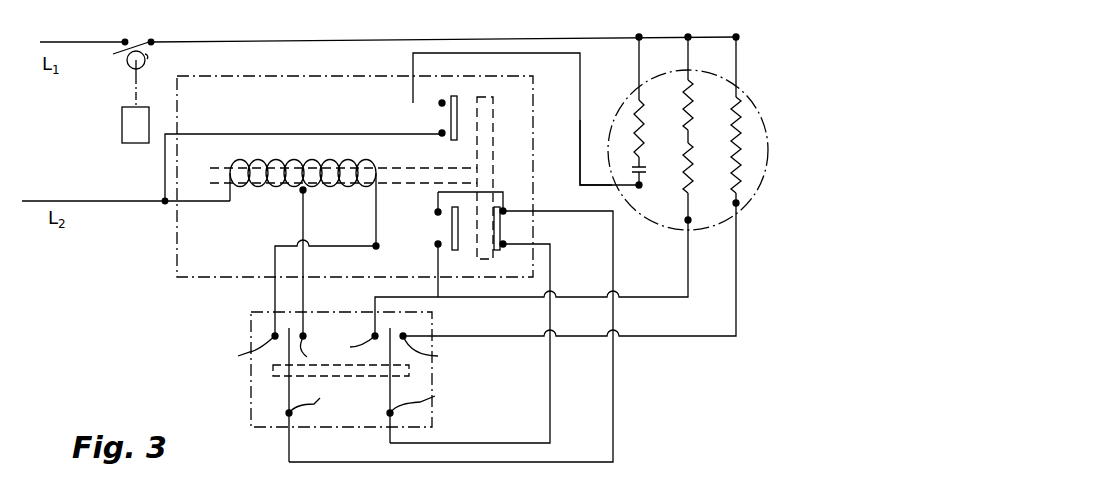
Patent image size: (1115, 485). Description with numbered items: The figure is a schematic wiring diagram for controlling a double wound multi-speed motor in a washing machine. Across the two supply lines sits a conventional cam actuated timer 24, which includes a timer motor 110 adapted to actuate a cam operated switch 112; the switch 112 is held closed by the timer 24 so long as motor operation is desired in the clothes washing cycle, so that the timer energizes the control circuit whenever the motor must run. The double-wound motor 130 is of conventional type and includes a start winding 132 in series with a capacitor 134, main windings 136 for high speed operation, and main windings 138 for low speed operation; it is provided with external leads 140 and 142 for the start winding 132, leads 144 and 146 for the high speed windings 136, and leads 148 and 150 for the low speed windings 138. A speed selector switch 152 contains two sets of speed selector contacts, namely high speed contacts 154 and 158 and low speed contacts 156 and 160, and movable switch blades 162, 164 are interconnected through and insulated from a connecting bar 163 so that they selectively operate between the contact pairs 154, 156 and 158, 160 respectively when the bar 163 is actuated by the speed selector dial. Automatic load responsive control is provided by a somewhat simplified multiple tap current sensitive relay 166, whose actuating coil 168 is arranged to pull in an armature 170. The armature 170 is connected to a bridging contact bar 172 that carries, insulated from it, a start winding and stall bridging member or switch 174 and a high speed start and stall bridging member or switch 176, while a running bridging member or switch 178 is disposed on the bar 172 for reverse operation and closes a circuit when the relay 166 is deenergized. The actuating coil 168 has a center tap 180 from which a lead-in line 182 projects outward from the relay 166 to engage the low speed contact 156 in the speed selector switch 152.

The cam actuated timer 24 is at (105, 104).
The timer motor 110 is at (138, 133).
The cam operated switch 112 is at (139, 48).
The double-wound motor 130 is at (787, 241).
The start winding 132 is at (643, 119).
The capacitor 134 is at (643, 168).
The main windings for high speed operation 136 is at (690, 124).
The main windings for low speed operation 138 is at (732, 148).
The external lead 140 is at (636, 74).
The external lead 142 is at (590, 187).
The lead 144 is at (690, 63).
The lead 146 is at (688, 235).
The lead 148 is at (739, 71).
The lead 150 is at (738, 302).
The speed selector switch 152 is at (250, 318).
The high speed contact 154 is at (238, 352).
The low speed contact 156 is at (320, 352).
The high speed contact 158 is at (351, 336).
The low speed contact 160 is at (438, 351).
The movable switch blade 162 is at (312, 396).
The connecting bar 163 is at (347, 377).
The movable switch blade 164 is at (430, 396).
The multiple tap current sensitive relay 166 is at (176, 262).
The actuating coil 168 is at (270, 172).
The armature 170 is at (406, 174).
The bridging contact bar 172 is at (485, 138).
The start winding and stall bridging member 174 is at (457, 107).
The high speed start and stall bridging member 176 is at (454, 250).
The running bridging member 178 is at (501, 208).
The center tap 180 is at (300, 192).
The lead-in line 182 is at (318, 286).